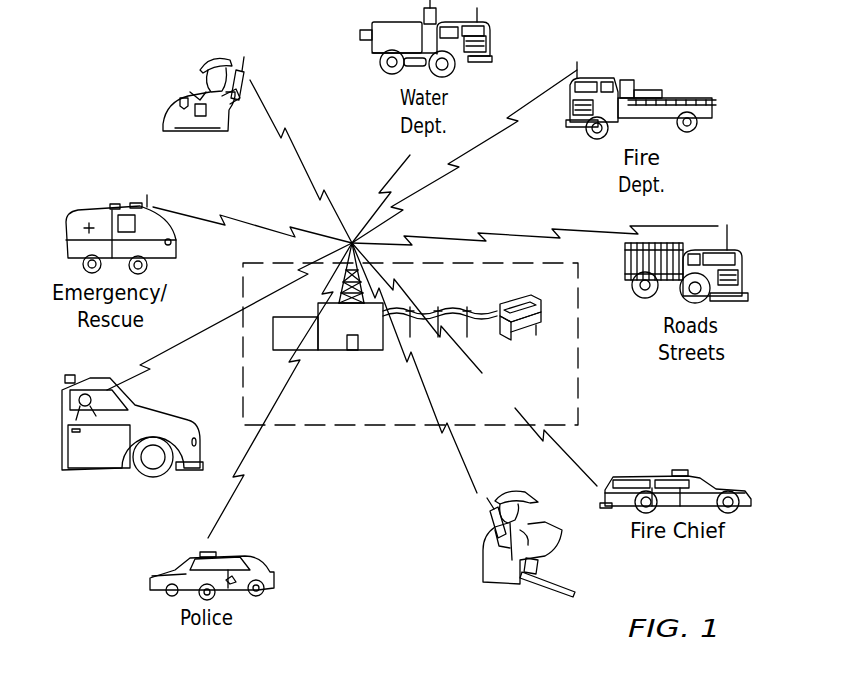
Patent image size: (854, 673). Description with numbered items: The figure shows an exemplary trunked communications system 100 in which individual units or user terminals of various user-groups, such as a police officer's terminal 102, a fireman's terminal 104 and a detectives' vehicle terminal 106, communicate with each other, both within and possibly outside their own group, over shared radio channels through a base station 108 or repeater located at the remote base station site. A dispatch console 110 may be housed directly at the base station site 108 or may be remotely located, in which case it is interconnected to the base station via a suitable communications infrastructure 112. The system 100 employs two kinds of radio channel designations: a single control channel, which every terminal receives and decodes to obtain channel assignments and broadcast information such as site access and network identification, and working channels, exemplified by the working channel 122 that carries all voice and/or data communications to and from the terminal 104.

The trunked communications system 100 is at (592, 27).
The terminal 102 is at (242, 87).
The terminal 104 is at (485, 507).
The terminal 106 is at (107, 403).
The base station 108 is at (243, 293).
The dispatch console 110 is at (537, 305).
The communications infrastructure 112 is at (483, 310).
The working channel 122 is at (462, 463).